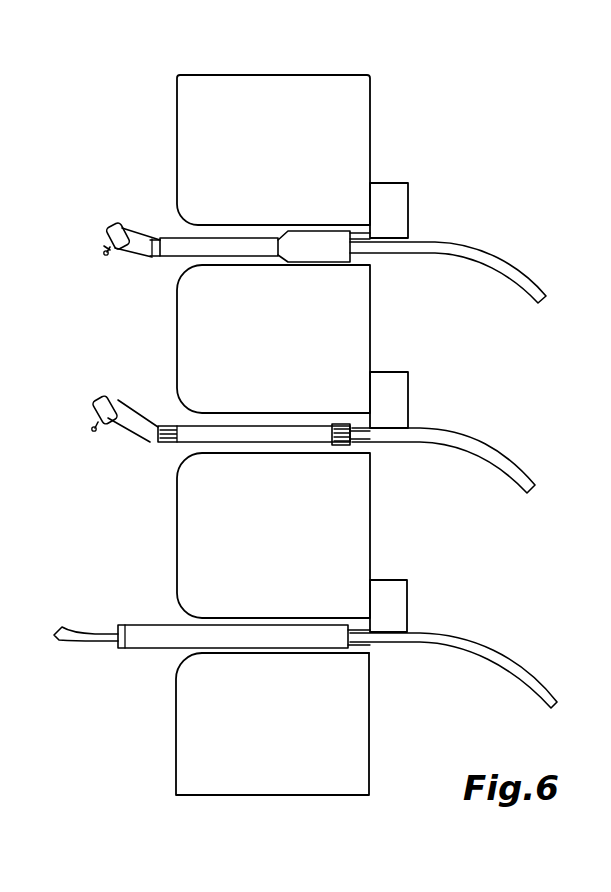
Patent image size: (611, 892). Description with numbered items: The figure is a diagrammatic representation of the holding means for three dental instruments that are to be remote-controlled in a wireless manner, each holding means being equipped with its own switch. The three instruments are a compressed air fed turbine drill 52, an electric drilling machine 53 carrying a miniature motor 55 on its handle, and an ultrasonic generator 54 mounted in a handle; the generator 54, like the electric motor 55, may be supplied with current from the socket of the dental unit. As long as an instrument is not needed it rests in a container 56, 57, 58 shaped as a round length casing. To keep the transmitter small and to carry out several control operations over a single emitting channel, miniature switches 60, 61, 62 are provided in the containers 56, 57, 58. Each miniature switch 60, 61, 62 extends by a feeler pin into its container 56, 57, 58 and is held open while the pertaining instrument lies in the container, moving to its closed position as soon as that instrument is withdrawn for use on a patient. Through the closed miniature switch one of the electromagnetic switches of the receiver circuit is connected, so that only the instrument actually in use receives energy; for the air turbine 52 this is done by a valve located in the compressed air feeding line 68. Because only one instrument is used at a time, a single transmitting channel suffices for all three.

The compressed air fed turbine drill 52 is at (143, 429).
The electric drilling machine 53 is at (163, 255).
The ultrasonic generator 54 is at (138, 646).
The miniature motor 55 is at (345, 250).
The container 56 is at (236, 452).
The container 57 is at (241, 264).
The container 58 is at (221, 653).
The miniature switch 60 is at (395, 395).
The miniature switch 61 is at (393, 197).
The miniature switch 62 is at (397, 590).
The compressed air feeding line 68 is at (465, 445).